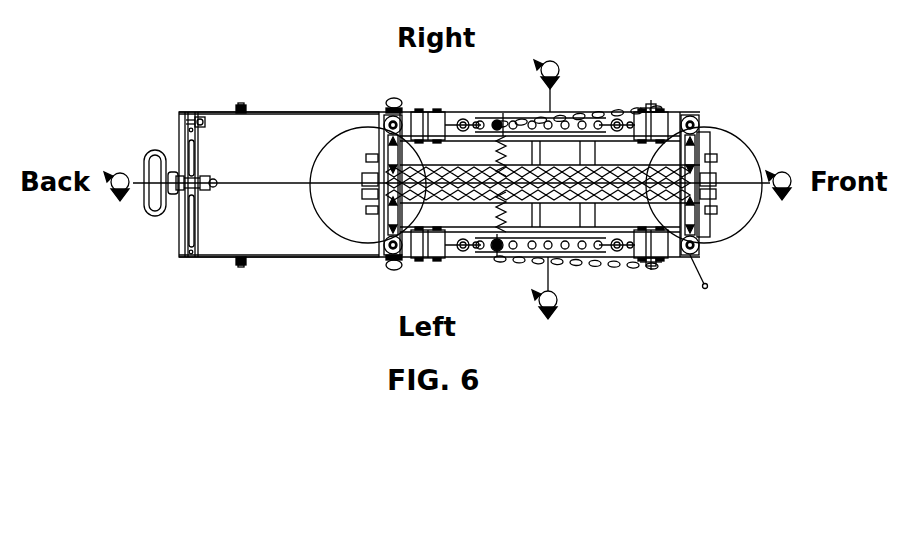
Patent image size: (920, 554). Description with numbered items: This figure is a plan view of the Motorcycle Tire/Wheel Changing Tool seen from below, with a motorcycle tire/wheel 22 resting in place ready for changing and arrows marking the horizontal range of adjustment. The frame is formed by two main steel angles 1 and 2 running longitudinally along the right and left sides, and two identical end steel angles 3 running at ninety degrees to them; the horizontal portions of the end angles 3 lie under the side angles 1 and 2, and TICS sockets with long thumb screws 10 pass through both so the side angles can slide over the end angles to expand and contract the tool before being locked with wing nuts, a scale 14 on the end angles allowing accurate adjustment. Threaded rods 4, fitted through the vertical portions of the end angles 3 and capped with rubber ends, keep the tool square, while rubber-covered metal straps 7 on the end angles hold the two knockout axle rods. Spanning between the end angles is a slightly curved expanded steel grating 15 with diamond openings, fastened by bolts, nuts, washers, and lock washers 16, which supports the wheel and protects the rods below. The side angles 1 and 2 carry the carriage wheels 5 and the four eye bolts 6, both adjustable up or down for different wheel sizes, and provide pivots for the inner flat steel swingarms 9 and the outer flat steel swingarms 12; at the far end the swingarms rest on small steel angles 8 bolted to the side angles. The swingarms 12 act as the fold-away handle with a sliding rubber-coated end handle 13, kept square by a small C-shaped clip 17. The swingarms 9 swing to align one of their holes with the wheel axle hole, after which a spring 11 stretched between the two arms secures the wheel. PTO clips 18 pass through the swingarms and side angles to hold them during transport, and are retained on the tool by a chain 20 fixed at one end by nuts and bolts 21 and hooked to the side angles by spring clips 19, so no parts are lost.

The main steel angle 1 is at (553, 117).
The main steel angle 2 is at (708, 286).
The end steel angle 3 is at (378, 132).
The threaded rod 4 is at (405, 143).
The carriage wheel 5 is at (422, 125).
The eye bolt 6 is at (465, 121).
The metal strap with rubber covering 7 is at (367, 158).
The steel angle 8 is at (672, 112).
The inner flat steel swingarm 9 is at (400, 103).
The long thumb screw 10 is at (386, 117).
The spring 11 is at (499, 252).
The flat steel swingarm 12 is at (278, 112).
The end handle 13 is at (157, 151).
The scale 14 is at (367, 197).
The expanded steel grating 15 is at (604, 167).
The bolts, nuts, washers, and lock washers 16 is at (366, 172).
The C-shaped clip 17 is at (203, 128).
The PTO clip 18 is at (652, 106).
The spring clip 19 is at (648, 110).
The chain 20 is at (509, 97).
The nuts and bolts 21 is at (503, 113).
The motorcycle tire/wheel 22 is at (323, 160).